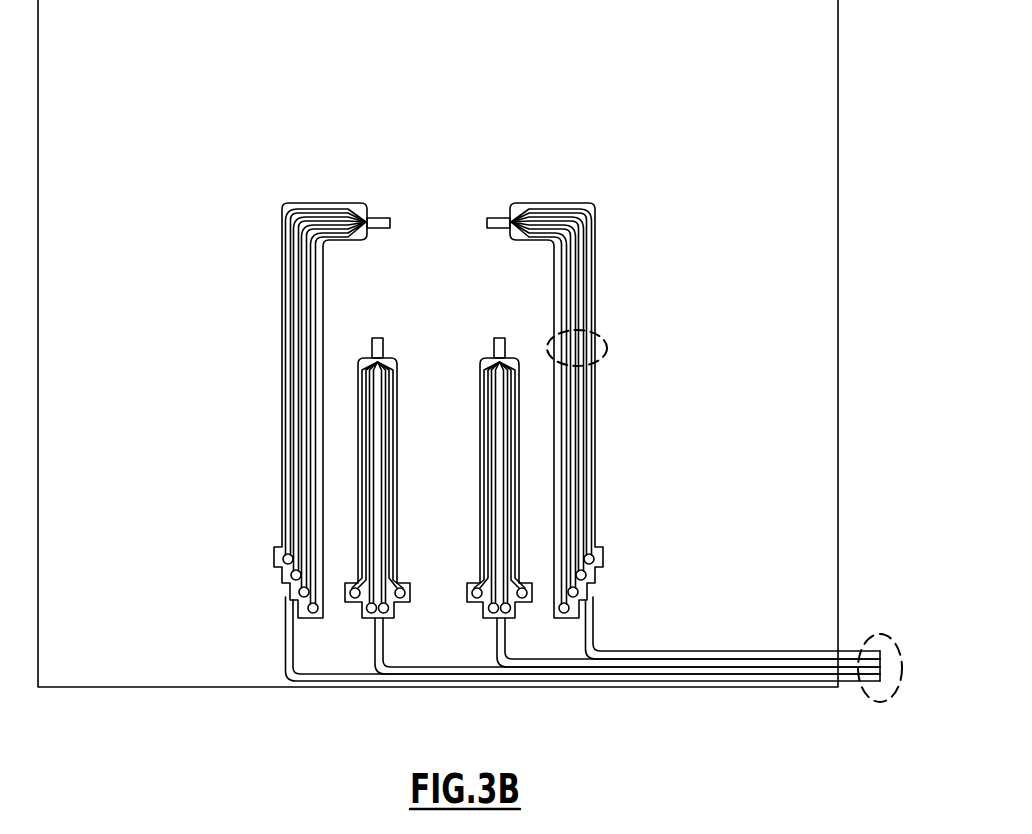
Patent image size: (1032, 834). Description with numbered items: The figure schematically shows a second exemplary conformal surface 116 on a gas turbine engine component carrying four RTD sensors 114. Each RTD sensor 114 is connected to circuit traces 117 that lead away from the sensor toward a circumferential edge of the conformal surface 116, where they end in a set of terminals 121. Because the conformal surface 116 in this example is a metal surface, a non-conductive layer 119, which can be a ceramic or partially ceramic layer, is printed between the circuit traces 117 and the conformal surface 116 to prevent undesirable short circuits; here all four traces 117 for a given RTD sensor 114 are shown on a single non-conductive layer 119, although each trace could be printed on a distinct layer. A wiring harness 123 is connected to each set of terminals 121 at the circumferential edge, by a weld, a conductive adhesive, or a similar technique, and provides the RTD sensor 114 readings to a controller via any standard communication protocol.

The RTD sensor 114 is at (489, 224).
The conformal surface 116 is at (138, 663).
The circuit traces 117 is at (607, 337).
The non-conductive layer 119 is at (597, 205).
The terminals 121 is at (571, 607).
The wiring harness 123 is at (878, 633).